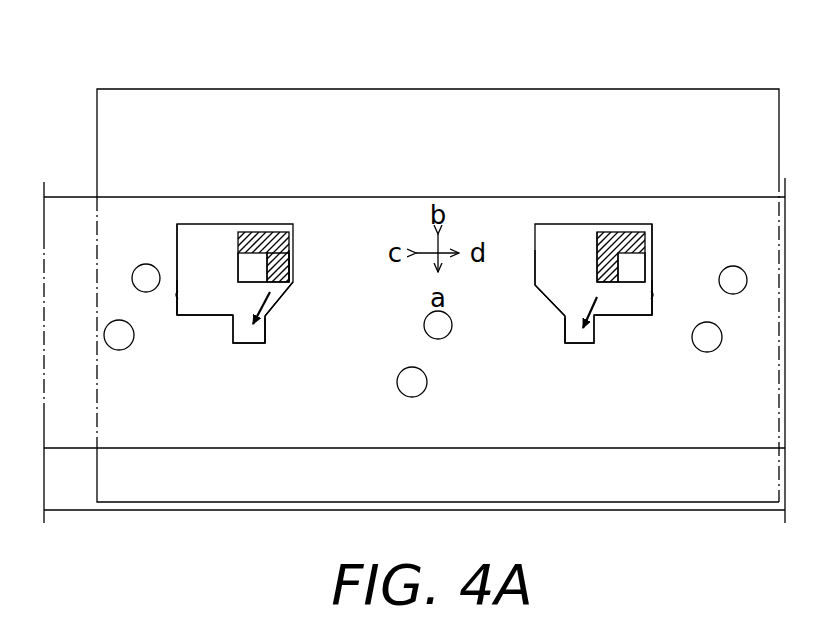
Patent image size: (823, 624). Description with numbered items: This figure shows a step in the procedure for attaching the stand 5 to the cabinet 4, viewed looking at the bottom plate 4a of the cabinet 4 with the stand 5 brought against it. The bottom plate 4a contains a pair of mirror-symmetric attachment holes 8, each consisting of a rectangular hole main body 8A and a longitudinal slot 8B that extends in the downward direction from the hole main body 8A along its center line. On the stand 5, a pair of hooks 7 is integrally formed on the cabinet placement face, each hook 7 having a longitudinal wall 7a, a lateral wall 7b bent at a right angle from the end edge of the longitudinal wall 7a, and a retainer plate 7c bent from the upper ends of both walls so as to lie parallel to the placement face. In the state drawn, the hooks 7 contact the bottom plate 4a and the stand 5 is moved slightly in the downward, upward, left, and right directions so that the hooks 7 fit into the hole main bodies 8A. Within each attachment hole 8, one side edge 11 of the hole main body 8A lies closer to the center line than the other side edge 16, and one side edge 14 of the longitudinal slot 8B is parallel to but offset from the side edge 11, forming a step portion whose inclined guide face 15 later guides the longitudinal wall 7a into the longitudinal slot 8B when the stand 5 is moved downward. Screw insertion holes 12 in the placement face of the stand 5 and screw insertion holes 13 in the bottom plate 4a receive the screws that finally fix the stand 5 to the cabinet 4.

The cabinet 4 is at (470, 194).
The bottom plate 4a is at (371, 222).
The stand 5 is at (378, 86).
The hook 7 is at (128, 58).
The longitudinal wall 7a is at (288, 276).
The lateral wall 7b is at (243, 244).
The retainer plate 7c is at (242, 271).
The attachment hole 8 is at (175, 402).
The hole main body 8A is at (210, 282).
The longitudinal slot 8B is at (248, 343).
The one side edge of hole main body 11 is at (290, 261).
The screw insertion holes 12 is at (143, 266).
The screw insertion holes 13 is at (120, 338).
The one side edge of longitudinal slot 14 is at (266, 331).
The inclined guide face 15 is at (283, 297).
The other side edge of hole main body 16 is at (177, 296).